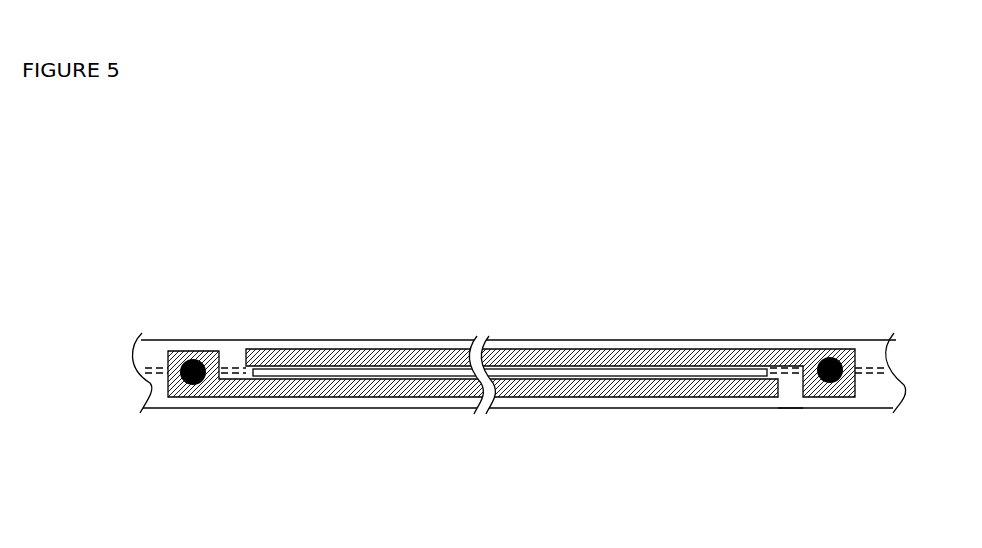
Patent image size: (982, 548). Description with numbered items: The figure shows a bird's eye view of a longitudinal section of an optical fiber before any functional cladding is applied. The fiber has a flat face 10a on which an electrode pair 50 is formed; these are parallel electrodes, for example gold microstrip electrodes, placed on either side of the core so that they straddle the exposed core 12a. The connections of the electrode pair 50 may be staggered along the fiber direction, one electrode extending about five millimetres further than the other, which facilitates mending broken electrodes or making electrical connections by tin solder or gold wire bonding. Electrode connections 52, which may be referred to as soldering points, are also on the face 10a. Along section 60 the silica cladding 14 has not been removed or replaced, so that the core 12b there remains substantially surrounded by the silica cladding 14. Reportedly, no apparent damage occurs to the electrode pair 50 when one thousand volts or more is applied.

The flat face 10a is at (157, 331).
The silica cladding 14 is at (877, 397).
The electrode pair 50 is at (368, 376).
The exposed core 12a is at (525, 358).
The core 12b is at (794, 353).
The electrode connections 52 is at (200, 353).
The section 60 is at (788, 408).